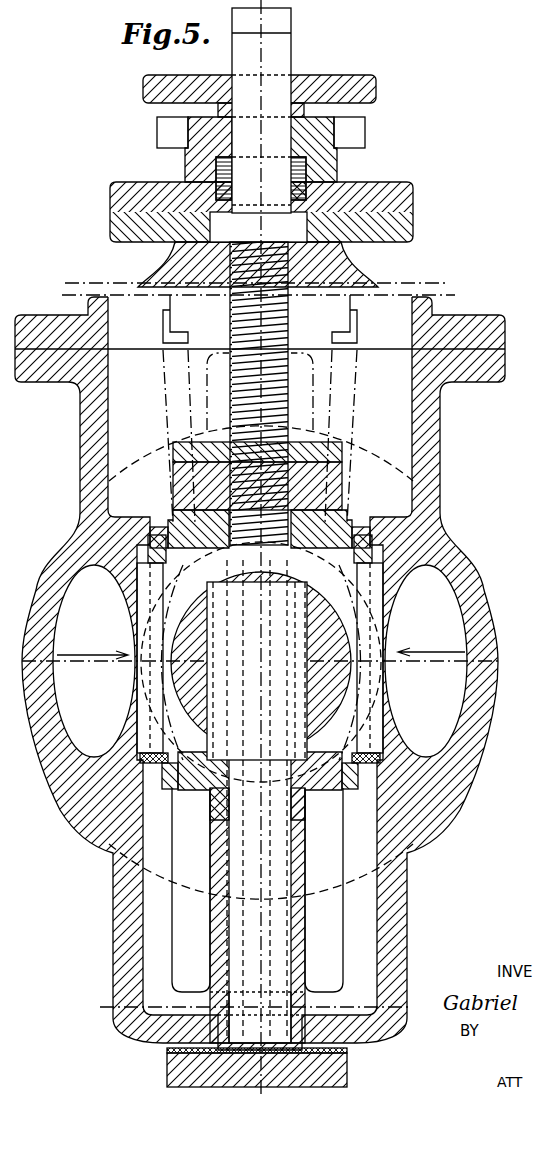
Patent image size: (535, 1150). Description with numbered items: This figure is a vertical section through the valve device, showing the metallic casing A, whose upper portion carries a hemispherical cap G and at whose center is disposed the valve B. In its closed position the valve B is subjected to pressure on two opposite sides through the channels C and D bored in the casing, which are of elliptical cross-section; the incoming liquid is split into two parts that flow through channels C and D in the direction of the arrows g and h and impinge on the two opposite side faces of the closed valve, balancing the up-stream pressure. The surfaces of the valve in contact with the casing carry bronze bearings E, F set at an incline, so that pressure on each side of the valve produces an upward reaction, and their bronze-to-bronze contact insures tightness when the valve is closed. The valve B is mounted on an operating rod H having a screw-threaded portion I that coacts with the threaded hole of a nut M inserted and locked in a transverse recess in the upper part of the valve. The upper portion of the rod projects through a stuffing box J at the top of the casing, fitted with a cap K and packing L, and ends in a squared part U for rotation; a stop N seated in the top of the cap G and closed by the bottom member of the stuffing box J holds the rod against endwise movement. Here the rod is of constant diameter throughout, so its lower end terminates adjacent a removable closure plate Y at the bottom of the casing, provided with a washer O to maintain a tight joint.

The squared part U is at (293, 30).
The cap K is at (376, 90).
The stuffing box J is at (112, 182).
The packing L is at (315, 165).
The stop N is at (228, 229).
The hemispherical cap G is at (365, 279).
The screw-threaded portion I is at (289, 330).
The casing A is at (80, 500).
The nut M is at (173, 474).
The valve B is at (172, 517).
The channel C is at (94, 661).
The channel D is at (426, 661).
The arrow g is at (92, 642).
The arrow h is at (431, 642).
The operating rod H is at (250, 677).
The bronze bearing F is at (170, 752).
The bronze bearing E is at (165, 762).
The washer O is at (190, 1053).
The closure plate Y is at (349, 1067).